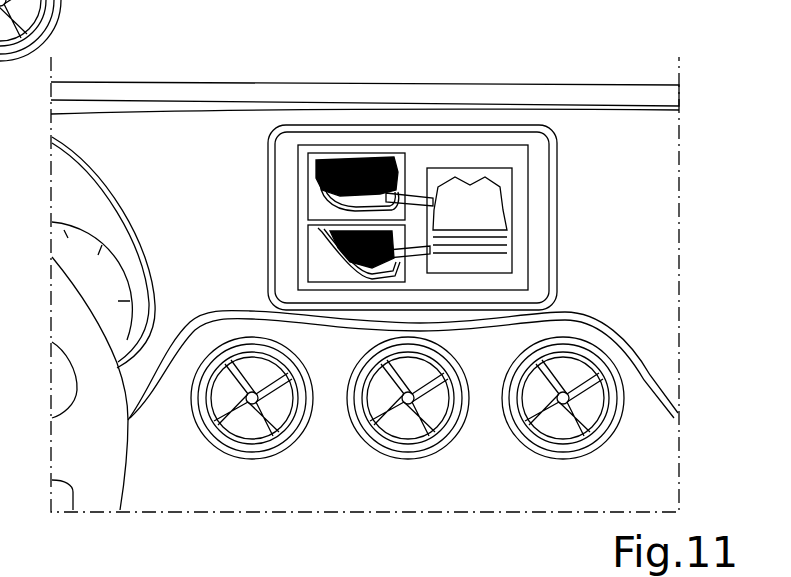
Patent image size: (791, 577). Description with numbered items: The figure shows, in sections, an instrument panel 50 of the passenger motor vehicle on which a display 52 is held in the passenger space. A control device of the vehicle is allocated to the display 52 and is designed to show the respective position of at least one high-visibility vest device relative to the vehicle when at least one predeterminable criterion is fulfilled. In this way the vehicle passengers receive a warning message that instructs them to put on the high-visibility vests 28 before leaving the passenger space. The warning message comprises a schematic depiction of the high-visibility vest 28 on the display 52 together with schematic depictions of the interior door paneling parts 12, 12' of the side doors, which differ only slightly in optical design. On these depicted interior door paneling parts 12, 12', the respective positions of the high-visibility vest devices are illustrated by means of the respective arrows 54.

The instrument panel 50 is at (638, 156).
The display 52 is at (530, 128).
The high-visibility vest 28 is at (482, 210).
The interior door paneling part 12 is at (308, 253).
The interior door paneling part 12' is at (357, 124).
The arrow 54 is at (417, 193).